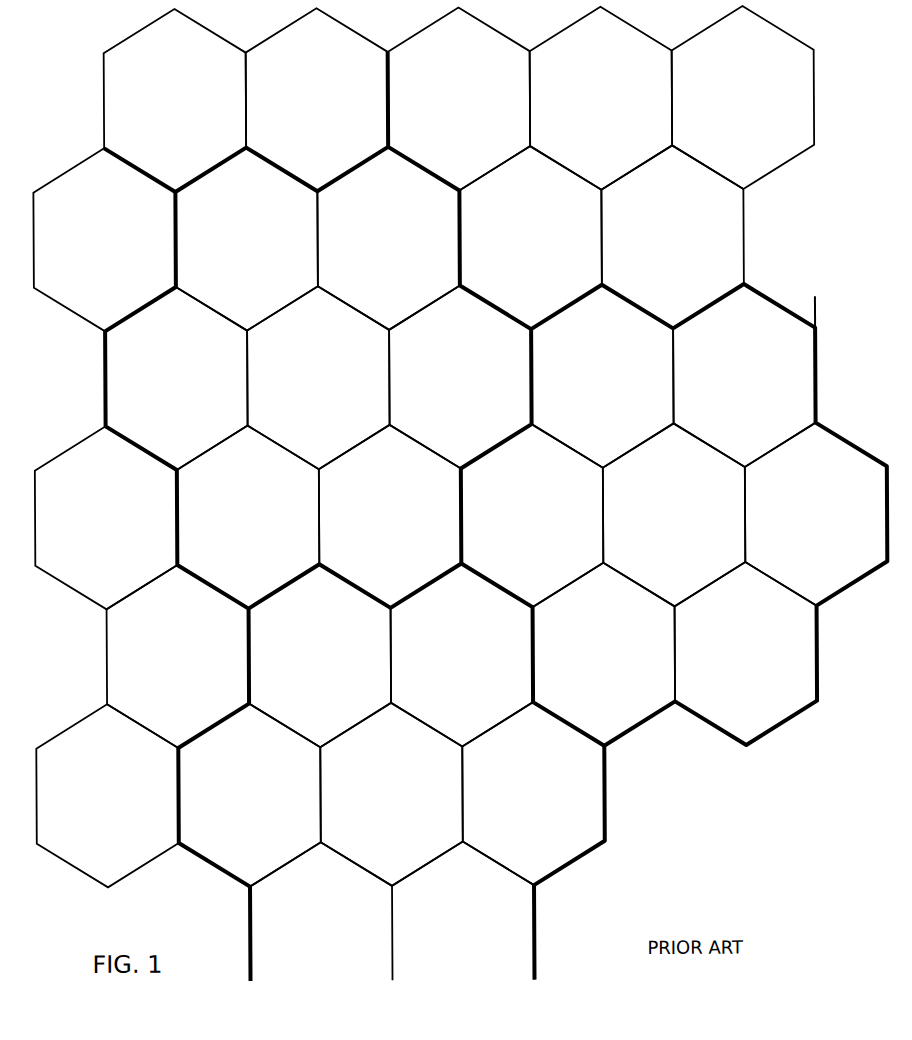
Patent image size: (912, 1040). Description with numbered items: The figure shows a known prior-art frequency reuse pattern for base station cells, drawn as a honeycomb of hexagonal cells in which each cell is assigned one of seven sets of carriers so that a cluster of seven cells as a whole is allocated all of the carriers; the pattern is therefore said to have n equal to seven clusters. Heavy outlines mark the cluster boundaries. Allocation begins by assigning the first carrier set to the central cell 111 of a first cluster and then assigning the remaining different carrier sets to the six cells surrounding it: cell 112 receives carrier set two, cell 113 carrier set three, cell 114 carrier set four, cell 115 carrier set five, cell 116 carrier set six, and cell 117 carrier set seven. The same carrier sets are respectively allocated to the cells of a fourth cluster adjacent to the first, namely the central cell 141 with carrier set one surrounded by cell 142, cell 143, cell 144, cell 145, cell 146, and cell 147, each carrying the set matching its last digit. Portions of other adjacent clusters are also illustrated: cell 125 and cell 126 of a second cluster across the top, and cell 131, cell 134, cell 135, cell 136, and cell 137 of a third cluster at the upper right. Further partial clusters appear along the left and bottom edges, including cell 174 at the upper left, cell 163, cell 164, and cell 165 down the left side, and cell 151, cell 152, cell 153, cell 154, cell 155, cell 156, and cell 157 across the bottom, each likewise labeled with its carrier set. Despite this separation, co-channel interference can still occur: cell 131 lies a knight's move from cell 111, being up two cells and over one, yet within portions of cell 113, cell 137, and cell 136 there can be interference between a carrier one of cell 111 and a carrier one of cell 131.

The cell of second cluster 126 is at (162, 162).
The cell of second cluster 125 is at (304, 162).
The cell of third cluster 137 is at (446, 162).
The cell of third cluster 131 is at (588, 162).
The cell of third cluster 134 is at (730, 162).
The cell of another adjacent cluster 174 is at (91, 312).
The cell of first cluster 112 is at (233, 312).
The cell of first cluster 113 is at (375, 312).
The cell of third cluster 136 is at (517, 312).
The cell of third cluster 135 is at (659, 312).
The cell of first cluster 117 is at (162, 452).
The central cell of first cluster 111 is at (304, 452).
The cell of first cluster 114 is at (446, 452).
The cell of fourth cluster 142 is at (588, 452).
The cell of fourth cluster 143 is at (730, 452).
The cell of another adjacent cluster 163 is at (91, 590).
The cell of first cluster 116 is at (233, 590).
The cell of first cluster 115 is at (375, 590).
The cell of fourth cluster 147 is at (517, 590).
The central cell of fourth cluster 141 is at (659, 590).
The cell of fourth cluster 144 is at (801, 590).
The cell of another adjacent cluster 164 is at (162, 730).
The cell of another adjacent cluster 152 is at (304, 730).
The cell of another adjacent cluster 153 is at (446, 730).
The cell of fourth cluster 146 is at (588, 730).
The cell of fourth cluster 145 is at (730, 730).
The cell of another adjacent cluster 165 is at (91, 870).
The cell of another adjacent cluster 157 is at (233, 870).
The central cell of another adjacent cluster 151 is at (375, 870).
The cell of another adjacent cluster 154 is at (517, 870).
The cell of another adjacent cluster 156 is at (304, 979).
The cell of another adjacent cluster 155 is at (446, 979).